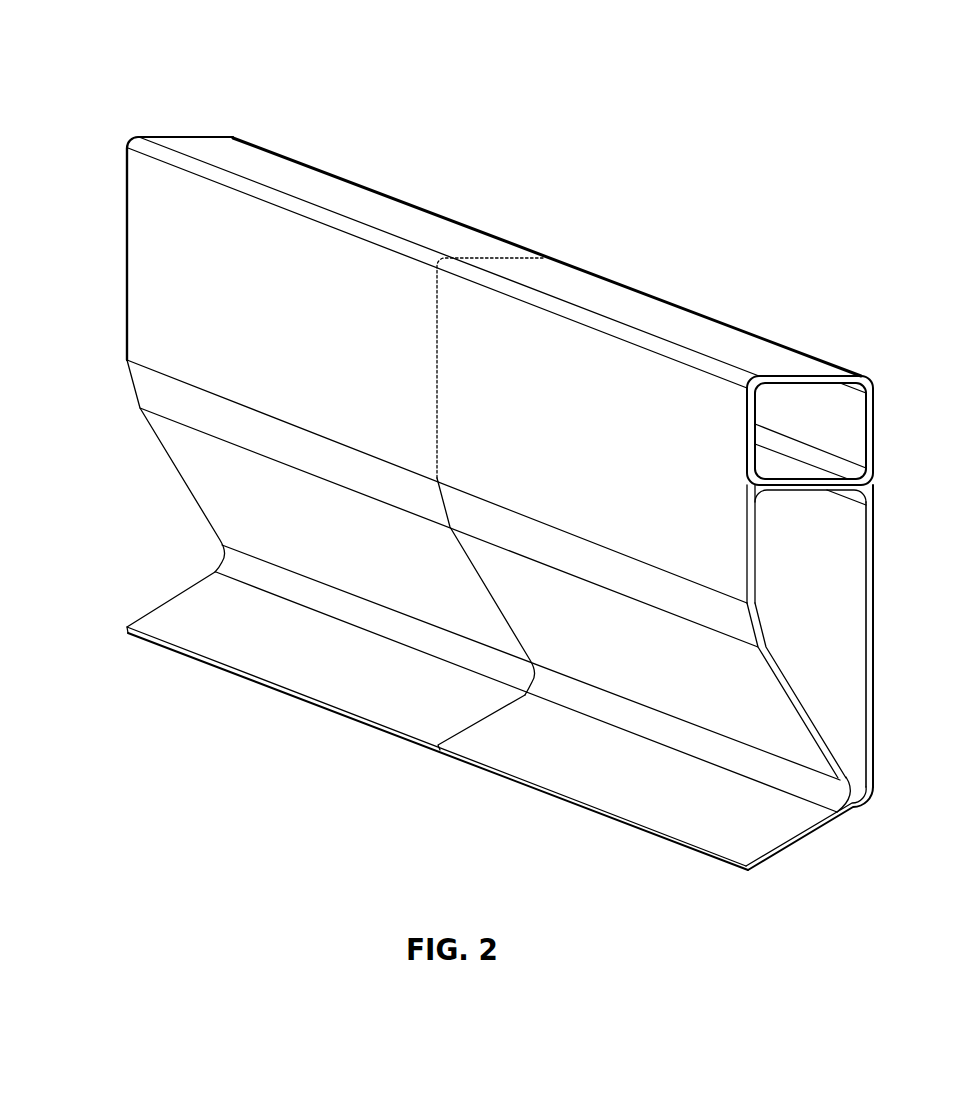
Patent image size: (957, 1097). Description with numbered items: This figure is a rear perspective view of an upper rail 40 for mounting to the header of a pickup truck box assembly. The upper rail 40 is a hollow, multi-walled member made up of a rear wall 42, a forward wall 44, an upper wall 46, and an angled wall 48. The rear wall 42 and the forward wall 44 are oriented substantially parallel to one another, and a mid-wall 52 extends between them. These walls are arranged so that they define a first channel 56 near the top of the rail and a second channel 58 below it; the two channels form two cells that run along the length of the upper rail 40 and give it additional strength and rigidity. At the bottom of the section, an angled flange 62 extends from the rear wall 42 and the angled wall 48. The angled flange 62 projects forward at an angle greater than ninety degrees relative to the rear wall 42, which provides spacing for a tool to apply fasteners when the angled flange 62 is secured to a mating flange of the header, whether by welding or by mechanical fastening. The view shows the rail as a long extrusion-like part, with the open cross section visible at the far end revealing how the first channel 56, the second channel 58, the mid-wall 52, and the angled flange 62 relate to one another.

The upper rail 40 is at (690, 260).
The rear wall 42 is at (873, 457).
The forward wall 44 is at (748, 525).
The upper wall 46 is at (812, 378).
The angled wall 48 is at (787, 700).
The mid-wall 52 is at (798, 492).
The first channel 56 is at (850, 415).
The second channel 58 is at (853, 634).
The angled flange 62 is at (800, 840).